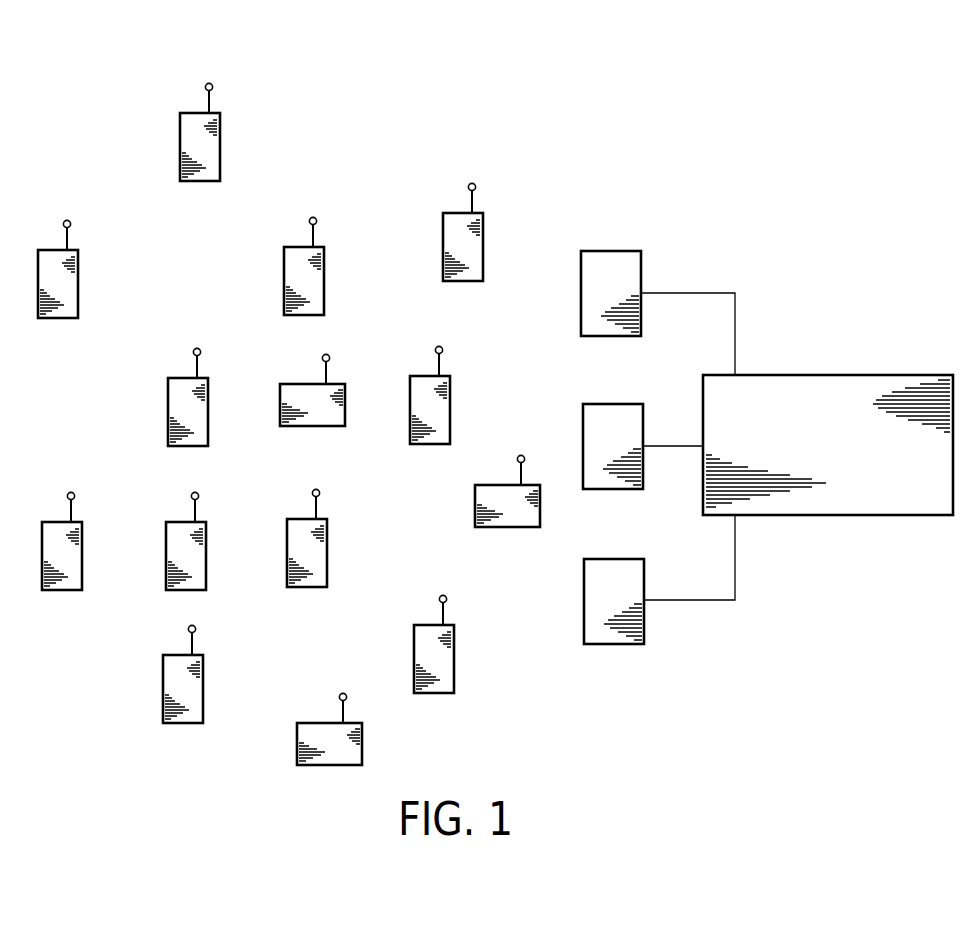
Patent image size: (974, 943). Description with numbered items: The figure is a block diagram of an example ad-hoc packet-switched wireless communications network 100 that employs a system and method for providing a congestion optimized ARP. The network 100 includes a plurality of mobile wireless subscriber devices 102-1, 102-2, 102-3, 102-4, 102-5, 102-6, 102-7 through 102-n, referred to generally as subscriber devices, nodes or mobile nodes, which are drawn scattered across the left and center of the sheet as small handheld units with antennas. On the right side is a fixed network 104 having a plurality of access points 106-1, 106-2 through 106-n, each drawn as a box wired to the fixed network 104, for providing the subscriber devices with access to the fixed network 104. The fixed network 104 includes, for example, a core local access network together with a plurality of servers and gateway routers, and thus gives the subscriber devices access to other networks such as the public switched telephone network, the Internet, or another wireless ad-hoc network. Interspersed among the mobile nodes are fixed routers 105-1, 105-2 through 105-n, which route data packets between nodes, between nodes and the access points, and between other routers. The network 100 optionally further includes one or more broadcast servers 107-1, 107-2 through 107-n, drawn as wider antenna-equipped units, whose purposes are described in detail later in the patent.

The ad-hoc packet-switched wireless communications network 100 is at (615, 113).
The mobile wireless subscriber device 102-1 is at (83, 549).
The mobile wireless subscriber device 102-2 is at (168, 401).
The mobile wireless subscriber device 102-3 is at (328, 551).
The mobile wireless subscriber device 102-4 is at (163, 702).
The mobile wireless subscriber device 102-5 is at (451, 406).
The mobile wireless subscriber device 102-6 is at (79, 284).
The mobile wireless subscriber device 102-7 is at (324, 279).
The mobile wireless subscriber device 102-n is at (454, 656).
The fixed network 104 is at (822, 375).
The fixed router 105-1 is at (207, 553).
The fixed router 105-2 is at (220, 148).
The fixed router 105-n is at (484, 247).
The access point 106-1 is at (609, 251).
The access point 106-2 is at (606, 404).
The access point 106-n is at (605, 559).
The broadcast server 107-1 is at (281, 404).
The broadcast server 107-2 is at (298, 748).
The broadcast server 107-n is at (476, 505).